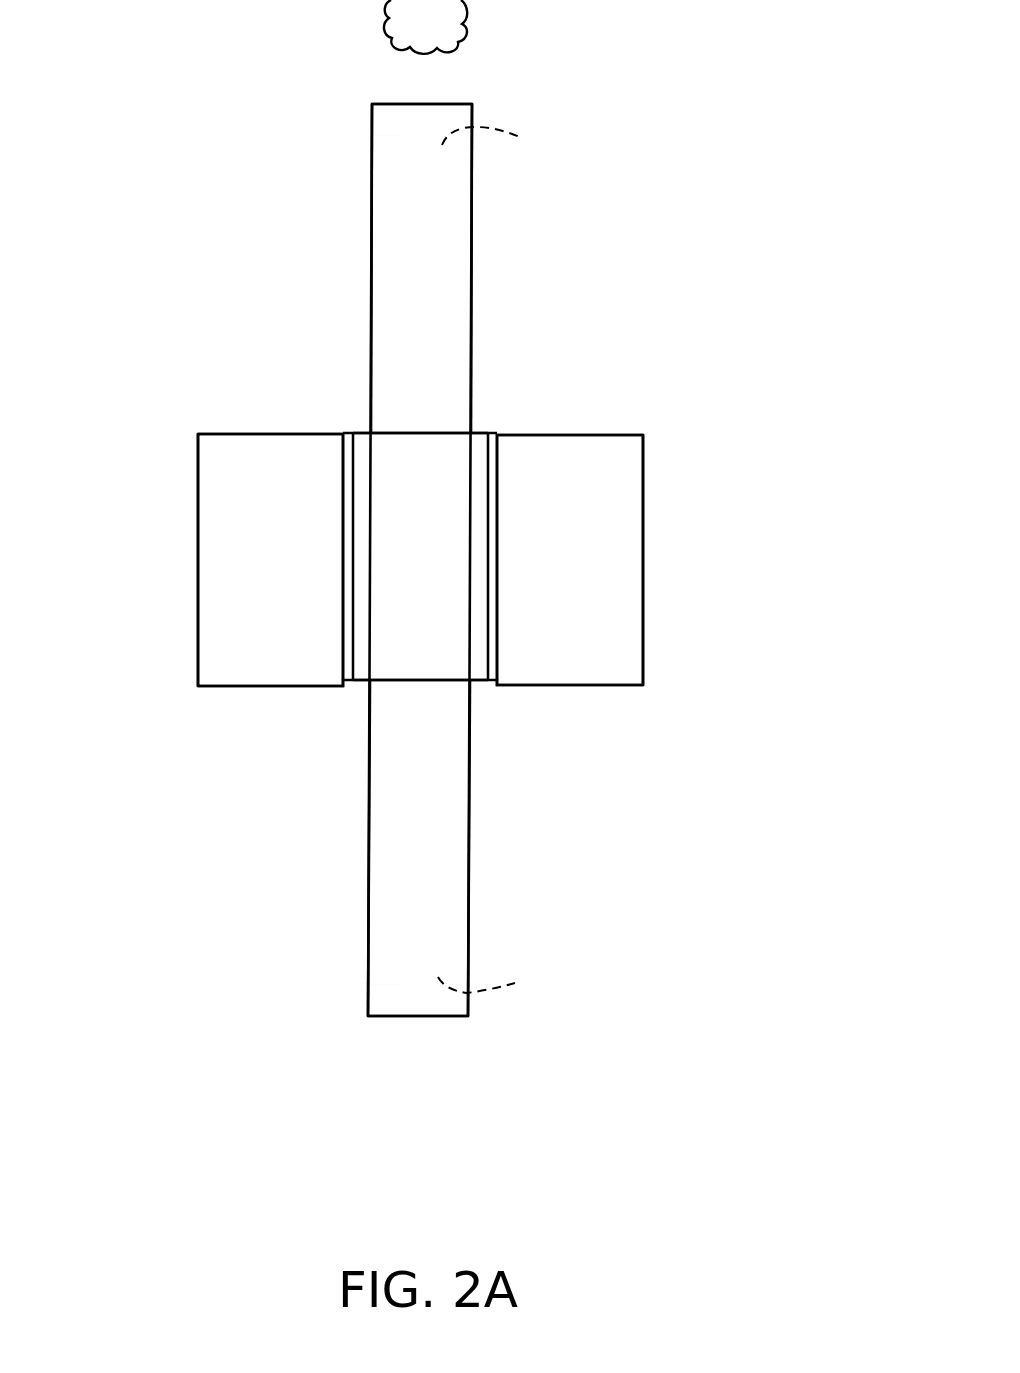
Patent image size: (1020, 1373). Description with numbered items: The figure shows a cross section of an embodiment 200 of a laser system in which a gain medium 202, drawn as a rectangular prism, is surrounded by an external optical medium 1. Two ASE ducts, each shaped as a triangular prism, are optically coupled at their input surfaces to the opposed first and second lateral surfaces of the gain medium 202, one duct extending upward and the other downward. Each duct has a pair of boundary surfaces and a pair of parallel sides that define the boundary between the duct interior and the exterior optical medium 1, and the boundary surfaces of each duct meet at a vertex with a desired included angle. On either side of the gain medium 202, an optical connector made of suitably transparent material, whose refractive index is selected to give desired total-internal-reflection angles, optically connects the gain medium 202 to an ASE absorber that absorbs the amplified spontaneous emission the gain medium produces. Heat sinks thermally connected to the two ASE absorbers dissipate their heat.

The external optical medium 1 is at (436, 33).
The embodiment of a gain medium and two ASE ducts 200 is at (463, 1202).
The gain medium 202 is at (435, 578).